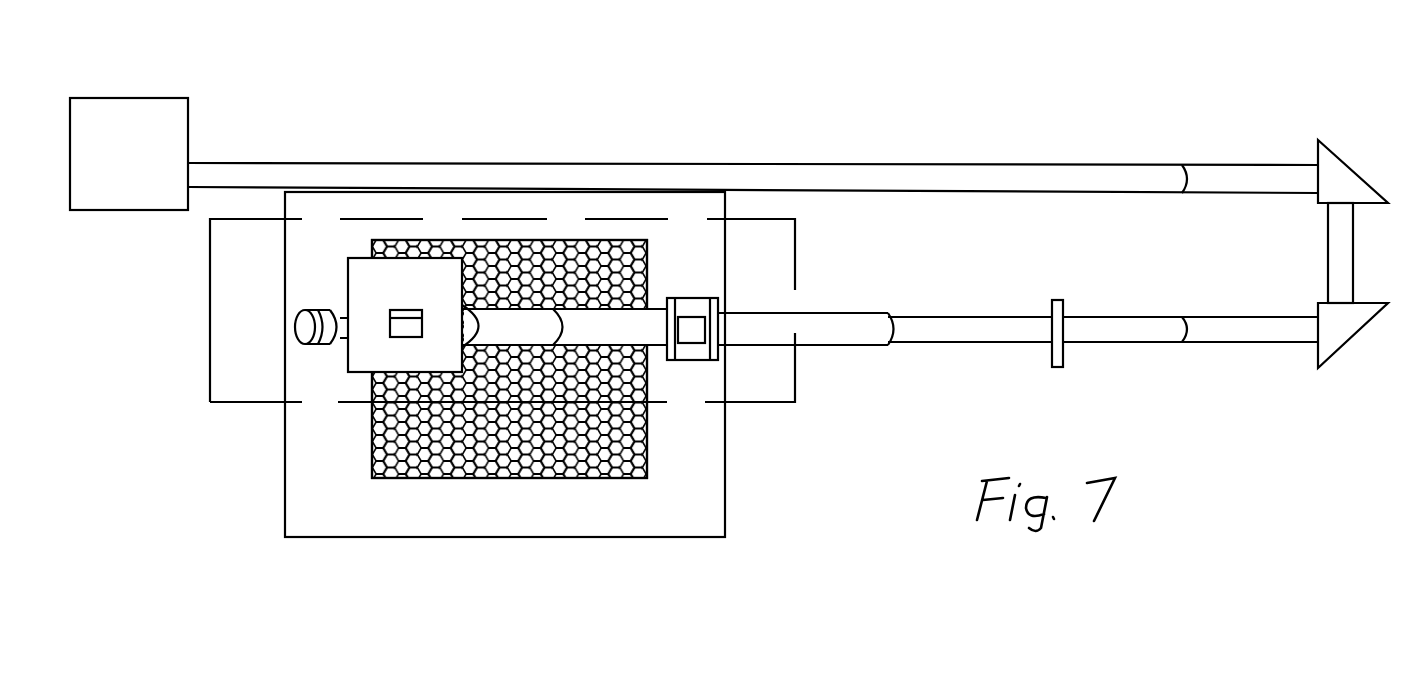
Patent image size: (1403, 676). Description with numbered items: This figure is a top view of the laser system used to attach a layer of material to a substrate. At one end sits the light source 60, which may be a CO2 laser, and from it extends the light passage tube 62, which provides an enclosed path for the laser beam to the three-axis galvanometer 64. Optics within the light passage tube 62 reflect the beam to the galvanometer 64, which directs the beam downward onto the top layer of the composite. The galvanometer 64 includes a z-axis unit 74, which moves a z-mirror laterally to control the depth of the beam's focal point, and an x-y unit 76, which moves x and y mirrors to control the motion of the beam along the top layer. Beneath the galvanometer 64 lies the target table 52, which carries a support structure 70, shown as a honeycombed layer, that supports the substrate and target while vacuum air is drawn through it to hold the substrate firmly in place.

The target table 52 is at (593, 503).
The light source 60 is at (163, 142).
The light passage tube 62 is at (997, 182).
The three-axis galvanometer 64 is at (210, 342).
The support structure 70 is at (468, 440).
The z-axis unit 74 is at (693, 360).
The x-y unit 76 is at (373, 353).